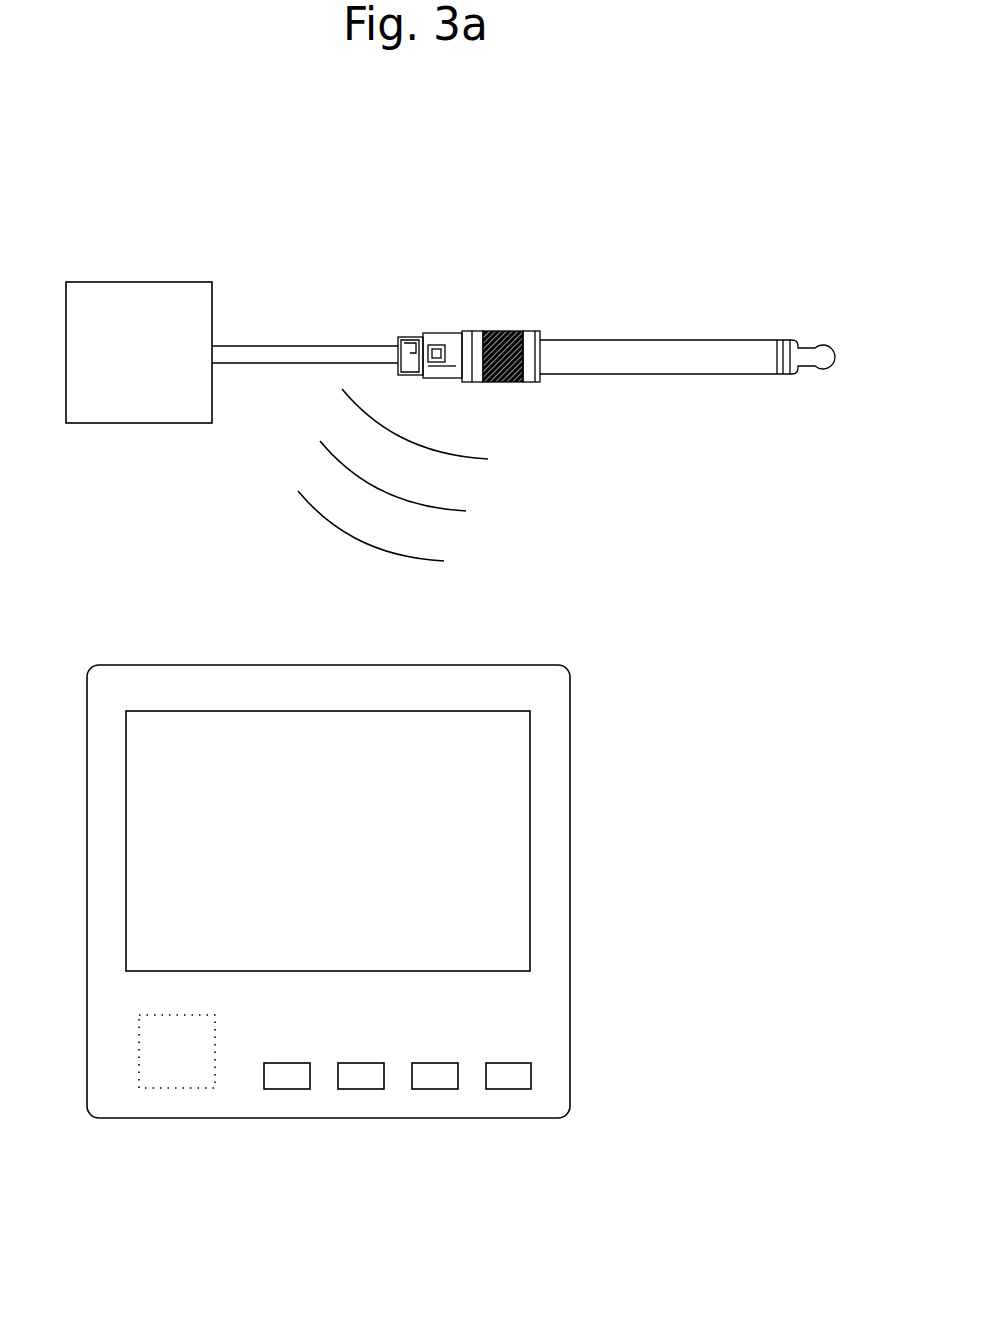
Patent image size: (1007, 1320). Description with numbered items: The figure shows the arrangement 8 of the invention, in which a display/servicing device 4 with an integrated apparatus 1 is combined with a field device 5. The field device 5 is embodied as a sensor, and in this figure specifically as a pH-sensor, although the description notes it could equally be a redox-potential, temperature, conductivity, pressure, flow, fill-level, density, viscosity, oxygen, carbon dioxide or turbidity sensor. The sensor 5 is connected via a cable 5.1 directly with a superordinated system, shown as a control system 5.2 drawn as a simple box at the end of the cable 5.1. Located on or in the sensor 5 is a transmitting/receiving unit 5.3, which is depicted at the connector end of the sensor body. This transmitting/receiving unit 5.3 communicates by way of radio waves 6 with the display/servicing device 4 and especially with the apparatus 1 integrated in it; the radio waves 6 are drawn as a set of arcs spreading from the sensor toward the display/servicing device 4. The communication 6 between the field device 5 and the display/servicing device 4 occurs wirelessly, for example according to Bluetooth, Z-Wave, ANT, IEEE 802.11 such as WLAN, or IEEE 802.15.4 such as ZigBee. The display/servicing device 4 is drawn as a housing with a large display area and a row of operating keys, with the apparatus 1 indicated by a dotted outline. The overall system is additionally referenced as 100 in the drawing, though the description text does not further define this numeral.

The apparatus 1 is at (172, 1063).
The display/servicing device 4 is at (550, 870).
The field device 5 is at (616, 316).
The cable 5.1 is at (294, 357).
The control system 5.2 is at (147, 322).
The transmitting/receiving unit 5.3 is at (437, 349).
The radio waves 6 is at (508, 532).
The arrangement 8 is at (718, 695).
The measuring system 100 is at (448, 952).